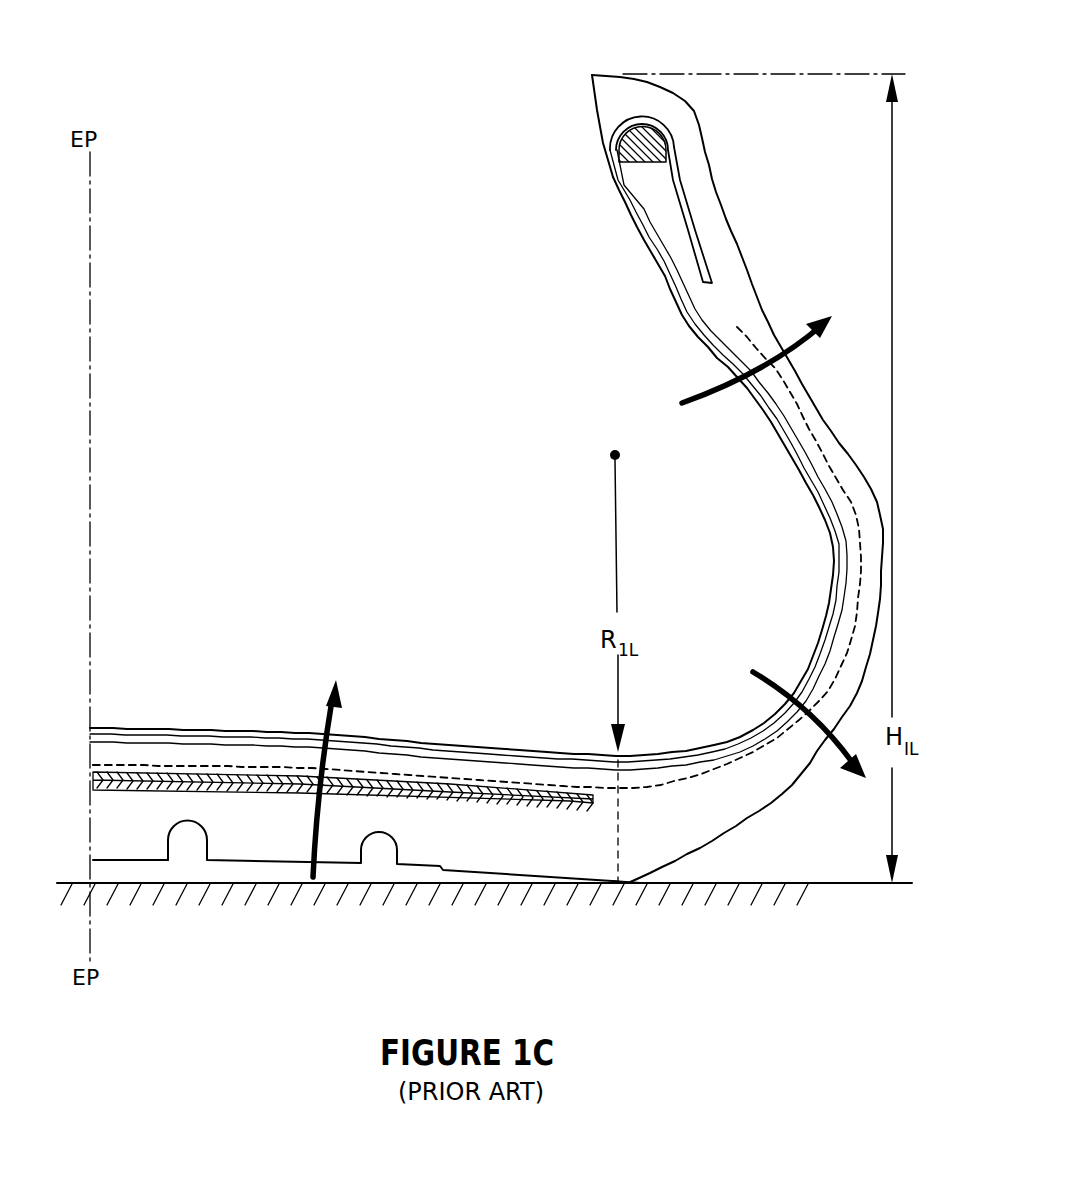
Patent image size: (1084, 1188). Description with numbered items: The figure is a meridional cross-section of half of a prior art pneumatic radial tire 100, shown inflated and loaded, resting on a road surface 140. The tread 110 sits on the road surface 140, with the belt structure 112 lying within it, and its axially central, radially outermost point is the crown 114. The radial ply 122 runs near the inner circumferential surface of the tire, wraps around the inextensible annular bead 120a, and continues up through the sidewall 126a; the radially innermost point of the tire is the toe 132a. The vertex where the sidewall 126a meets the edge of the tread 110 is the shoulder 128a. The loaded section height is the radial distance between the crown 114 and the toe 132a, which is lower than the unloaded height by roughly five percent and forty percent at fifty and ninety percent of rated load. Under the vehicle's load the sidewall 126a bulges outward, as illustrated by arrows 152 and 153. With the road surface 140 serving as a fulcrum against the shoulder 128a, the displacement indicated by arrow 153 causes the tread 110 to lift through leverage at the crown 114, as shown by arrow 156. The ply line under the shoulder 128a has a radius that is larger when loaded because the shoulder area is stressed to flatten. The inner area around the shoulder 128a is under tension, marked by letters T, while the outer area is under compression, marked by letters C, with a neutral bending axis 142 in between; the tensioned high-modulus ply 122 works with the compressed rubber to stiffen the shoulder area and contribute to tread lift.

The pneumatic radial tire 100 is at (654, 48).
The toe 132a is at (592, 75).
The annular bead 120a is at (652, 139).
The radial ply 122 is at (185, 740).
The neutral bending axis 142 is at (128, 767).
The belt structure 112 is at (280, 780).
The tread 110 is at (443, 870).
The crown 114 is at (113, 860).
The shoulder 128a is at (630, 887).
The road surface 140 is at (727, 883).
The sidewall 126a is at (877, 550).
The arrow 152 is at (722, 395).
The arrow 153 is at (777, 682).
The arrow 156 is at (359, 777).